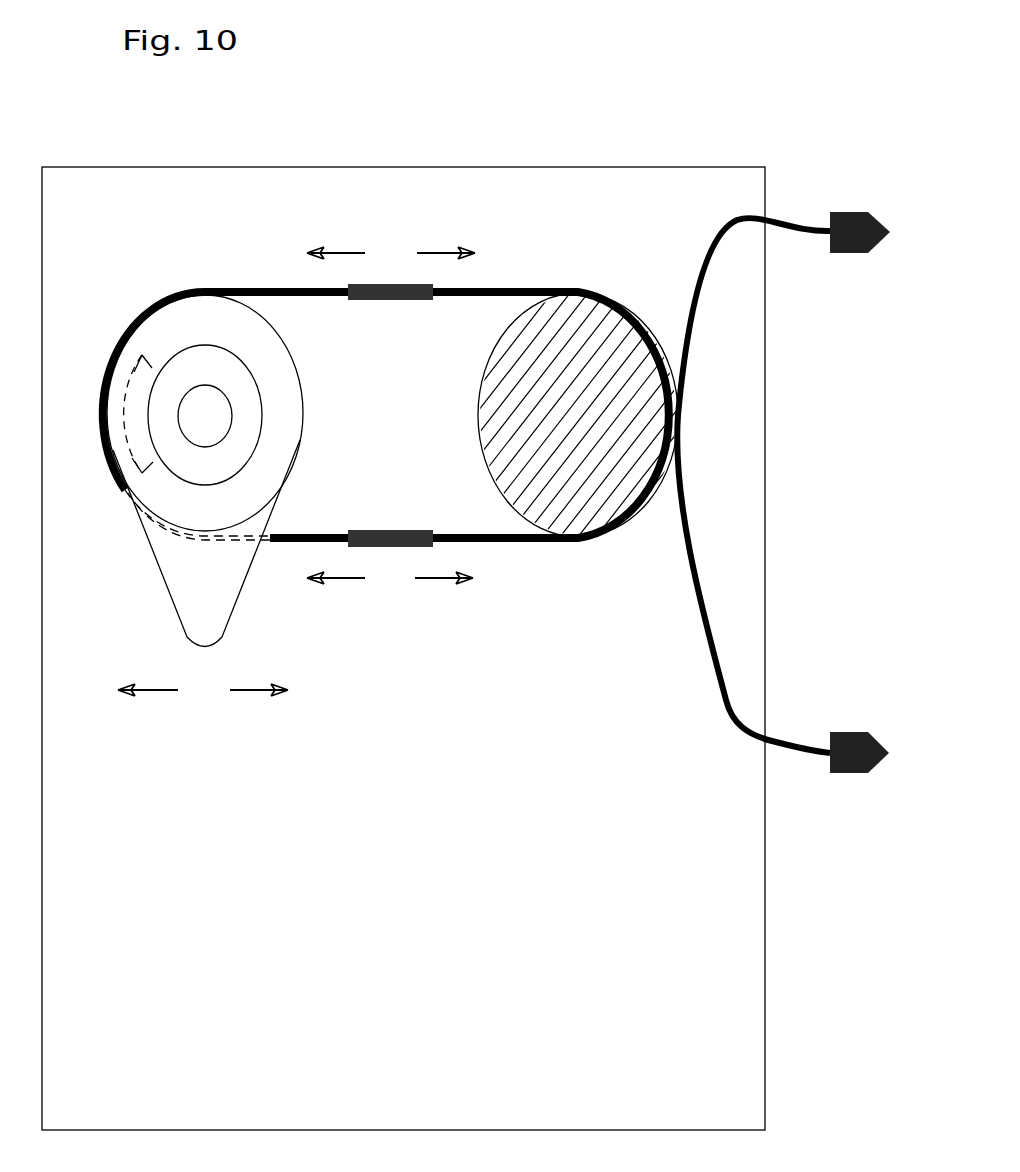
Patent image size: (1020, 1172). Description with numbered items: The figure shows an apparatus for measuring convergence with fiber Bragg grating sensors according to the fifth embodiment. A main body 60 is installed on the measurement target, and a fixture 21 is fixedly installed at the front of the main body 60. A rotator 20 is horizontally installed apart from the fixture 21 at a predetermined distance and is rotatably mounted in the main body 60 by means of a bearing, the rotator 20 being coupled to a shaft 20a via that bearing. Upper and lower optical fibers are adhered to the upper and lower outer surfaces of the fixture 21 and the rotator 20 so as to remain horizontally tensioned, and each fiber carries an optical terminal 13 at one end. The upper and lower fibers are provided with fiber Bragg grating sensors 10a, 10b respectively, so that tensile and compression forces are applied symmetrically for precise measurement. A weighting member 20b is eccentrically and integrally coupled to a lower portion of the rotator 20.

The fiber Bragg grating sensor 10a is at (388, 283).
The fiber Bragg grating sensor 10b is at (390, 547).
The optical terminal 13 is at (860, 253).
The rotator 20 is at (252, 332).
The shaft 20a is at (215, 413).
The weighting member 20b is at (187, 585).
The fixture 21 is at (495, 397).
The main body 60 is at (728, 910).